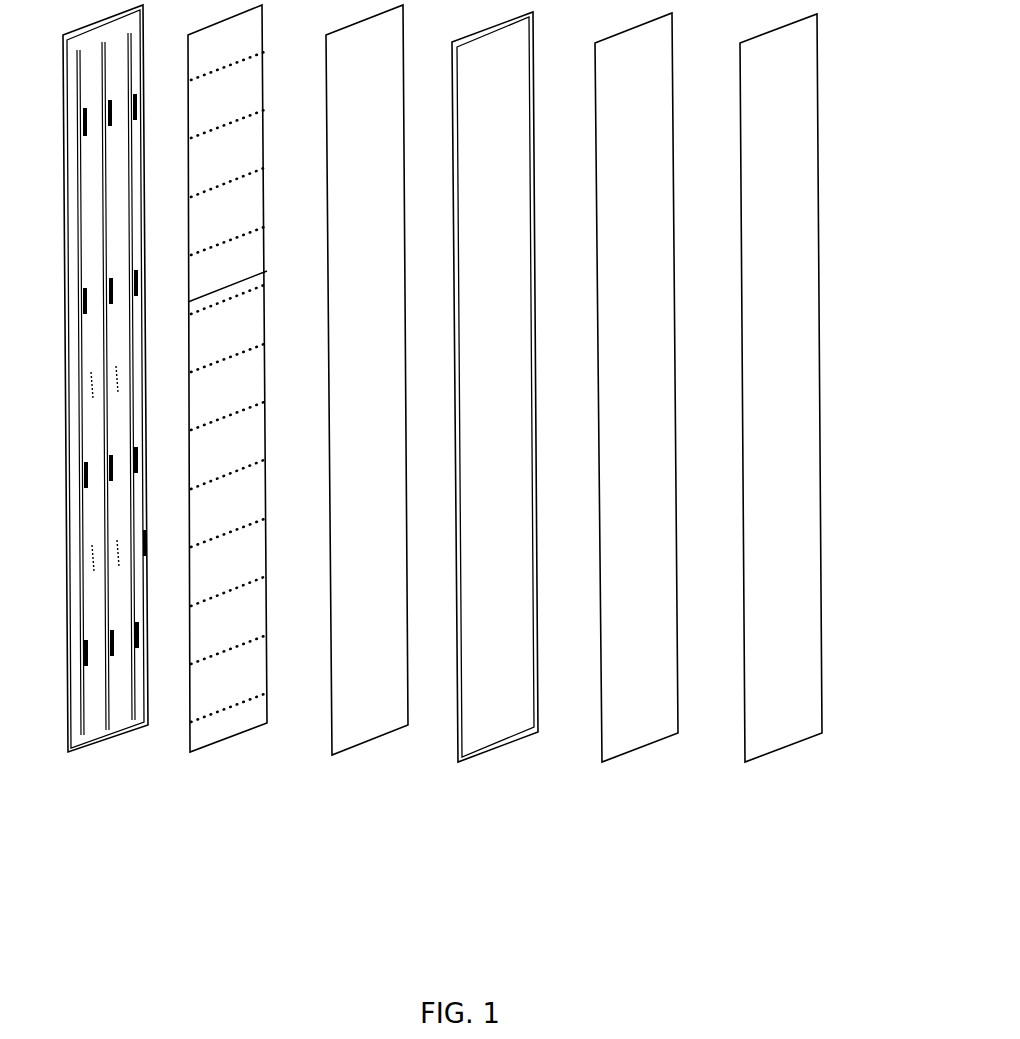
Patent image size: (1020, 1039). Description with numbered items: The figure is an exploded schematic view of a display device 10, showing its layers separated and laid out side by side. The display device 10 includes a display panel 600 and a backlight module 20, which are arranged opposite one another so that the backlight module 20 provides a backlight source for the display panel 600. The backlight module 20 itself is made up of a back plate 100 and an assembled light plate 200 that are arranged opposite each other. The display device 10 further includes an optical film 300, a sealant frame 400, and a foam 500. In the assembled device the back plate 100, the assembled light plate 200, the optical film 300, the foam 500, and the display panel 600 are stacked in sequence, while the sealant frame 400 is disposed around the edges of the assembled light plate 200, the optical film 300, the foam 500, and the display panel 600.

The display device 10 is at (432, 457).
The backlight module 20 is at (154, 429).
The back plate 100 is at (84, 732).
The assembled light plate 200 is at (205, 403).
The optical film 300 is at (340, 748).
The sealant frame 400 is at (495, 745).
The foam 500 is at (626, 742).
The display panel 600 is at (759, 430).